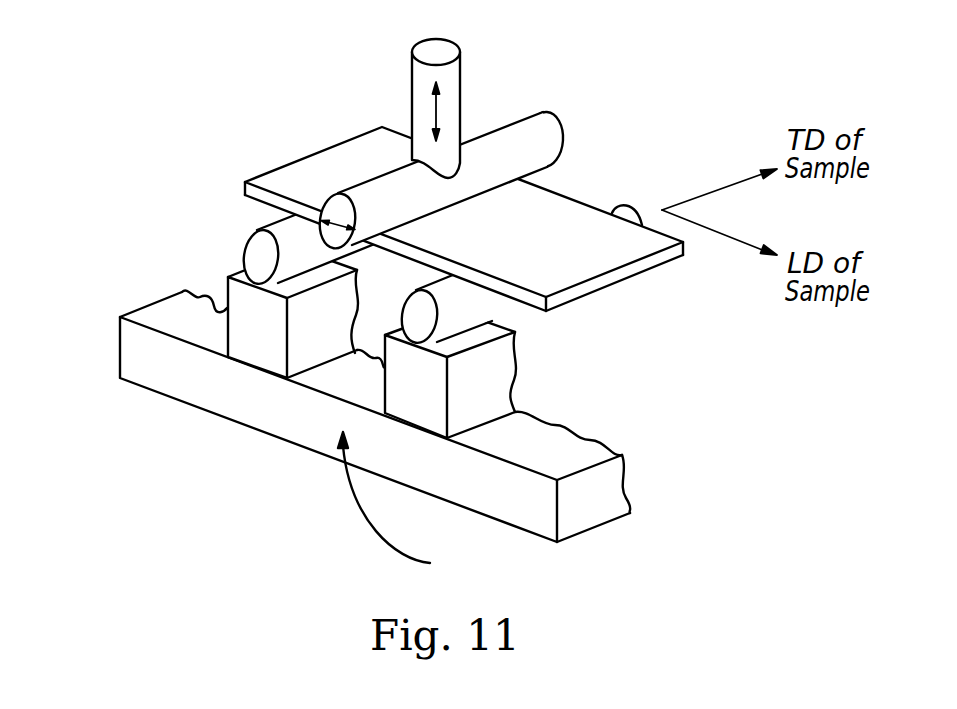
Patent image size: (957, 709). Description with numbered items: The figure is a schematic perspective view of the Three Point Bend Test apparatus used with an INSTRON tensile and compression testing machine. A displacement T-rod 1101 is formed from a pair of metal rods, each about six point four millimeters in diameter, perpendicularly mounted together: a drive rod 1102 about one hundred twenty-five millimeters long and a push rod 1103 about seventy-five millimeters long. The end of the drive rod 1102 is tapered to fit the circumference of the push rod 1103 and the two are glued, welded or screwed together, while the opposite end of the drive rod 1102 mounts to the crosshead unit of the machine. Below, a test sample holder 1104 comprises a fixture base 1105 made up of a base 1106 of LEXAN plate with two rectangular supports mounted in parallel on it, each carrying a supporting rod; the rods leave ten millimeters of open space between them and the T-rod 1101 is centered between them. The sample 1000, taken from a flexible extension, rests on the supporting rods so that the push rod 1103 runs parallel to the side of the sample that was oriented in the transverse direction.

The sample 1000 is at (587, 265).
The T-rod 1101 is at (443, 108).
The drive rod 1102 is at (462, 72).
The push rod 1103 is at (556, 130).
The test sample holder 1104 is at (411, 508).
The fixture base 1105 is at (325, 416).
The base 1106 is at (132, 350).